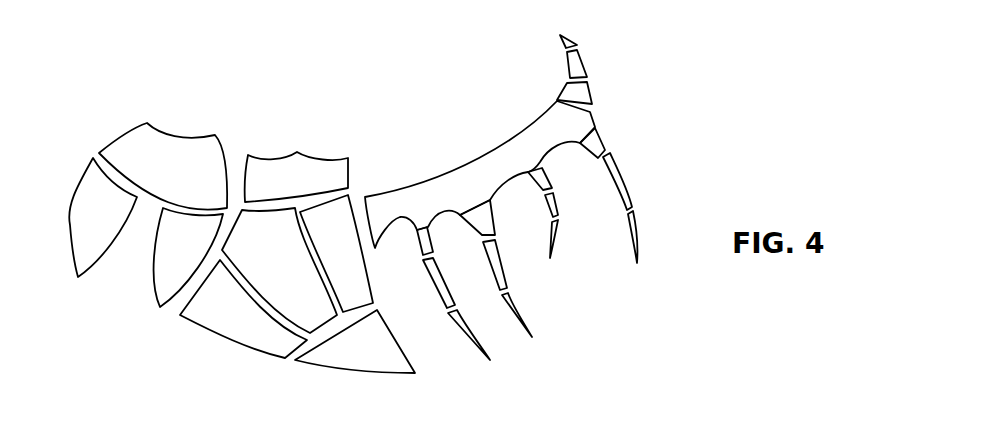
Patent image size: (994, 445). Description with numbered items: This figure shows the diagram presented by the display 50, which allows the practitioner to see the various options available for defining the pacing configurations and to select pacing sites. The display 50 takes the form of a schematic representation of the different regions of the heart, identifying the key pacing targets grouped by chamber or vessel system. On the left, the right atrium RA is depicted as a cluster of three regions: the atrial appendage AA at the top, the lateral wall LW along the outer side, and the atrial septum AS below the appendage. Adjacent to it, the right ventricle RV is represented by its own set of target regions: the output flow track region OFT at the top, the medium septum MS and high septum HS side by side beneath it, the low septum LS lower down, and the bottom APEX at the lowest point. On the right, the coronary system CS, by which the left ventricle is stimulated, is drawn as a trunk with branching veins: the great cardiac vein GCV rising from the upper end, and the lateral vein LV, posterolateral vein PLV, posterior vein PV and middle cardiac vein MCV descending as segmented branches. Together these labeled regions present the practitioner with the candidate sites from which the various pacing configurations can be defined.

The display 50 is at (167, 104).
The atrial appendage AA is at (163, 166).
The lateral wall LW is at (103, 217).
The atrial septum AS is at (188, 257).
The right atrium RA is at (102, 302).
The output flow track region OFT is at (296, 177).
The medium septum MS is at (279, 270).
The high septum HS is at (336, 253).
The low septum LS is at (243, 309).
The bottom apex APEX is at (355, 341).
The right ventricle RV is at (283, 365).
The coronary system CS is at (588, 352).
The great cardiac vein GCV is at (606, 69).
The lateral vein LV is at (627, 195).
The posterolateral vein PLV is at (562, 213).
The posterior vein PV is at (513, 269).
The middle cardiac vein MCV is at (453, 298).